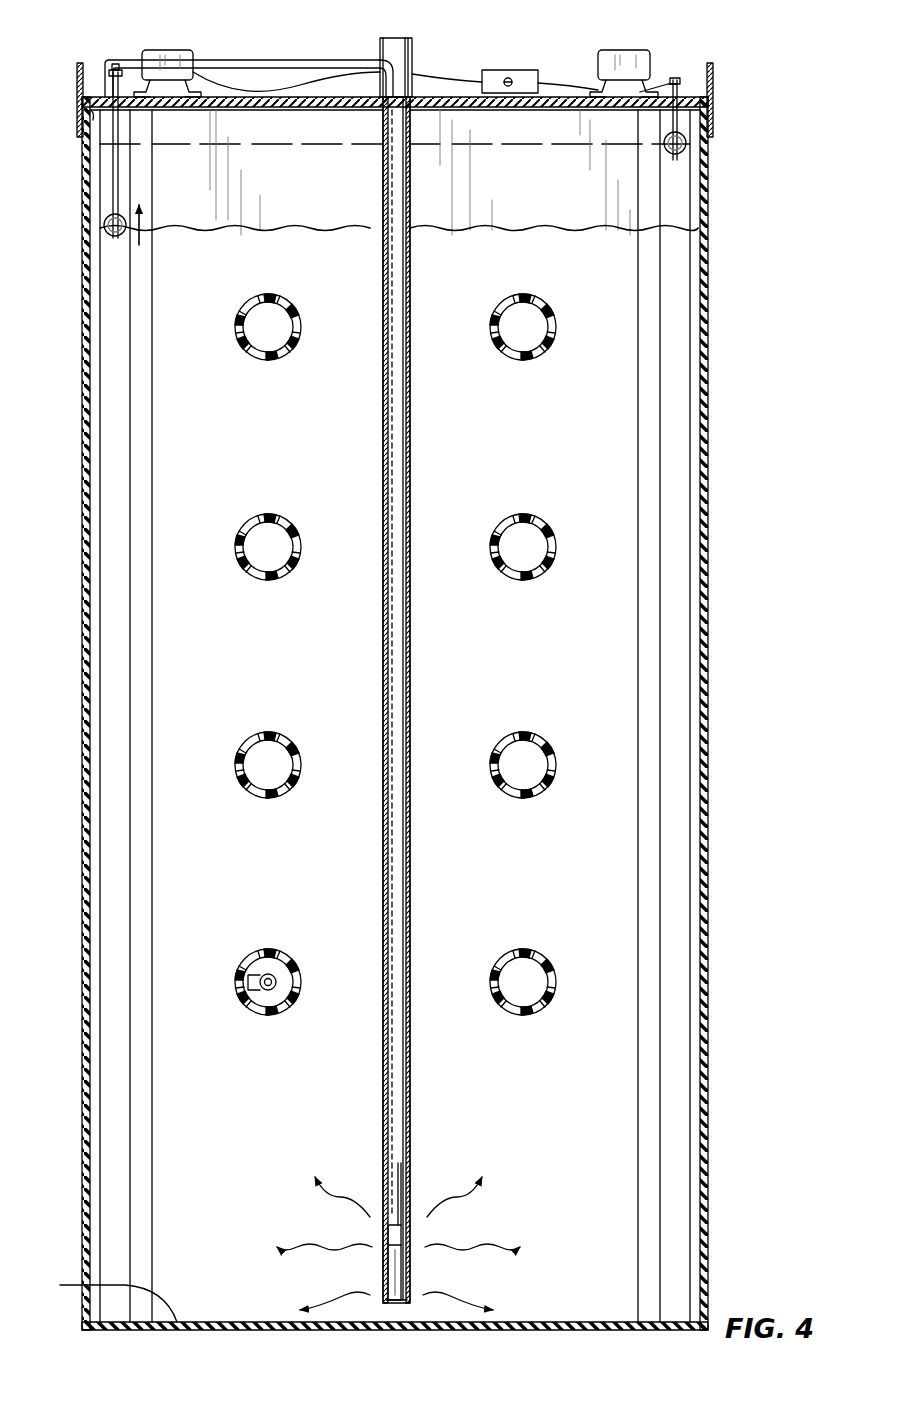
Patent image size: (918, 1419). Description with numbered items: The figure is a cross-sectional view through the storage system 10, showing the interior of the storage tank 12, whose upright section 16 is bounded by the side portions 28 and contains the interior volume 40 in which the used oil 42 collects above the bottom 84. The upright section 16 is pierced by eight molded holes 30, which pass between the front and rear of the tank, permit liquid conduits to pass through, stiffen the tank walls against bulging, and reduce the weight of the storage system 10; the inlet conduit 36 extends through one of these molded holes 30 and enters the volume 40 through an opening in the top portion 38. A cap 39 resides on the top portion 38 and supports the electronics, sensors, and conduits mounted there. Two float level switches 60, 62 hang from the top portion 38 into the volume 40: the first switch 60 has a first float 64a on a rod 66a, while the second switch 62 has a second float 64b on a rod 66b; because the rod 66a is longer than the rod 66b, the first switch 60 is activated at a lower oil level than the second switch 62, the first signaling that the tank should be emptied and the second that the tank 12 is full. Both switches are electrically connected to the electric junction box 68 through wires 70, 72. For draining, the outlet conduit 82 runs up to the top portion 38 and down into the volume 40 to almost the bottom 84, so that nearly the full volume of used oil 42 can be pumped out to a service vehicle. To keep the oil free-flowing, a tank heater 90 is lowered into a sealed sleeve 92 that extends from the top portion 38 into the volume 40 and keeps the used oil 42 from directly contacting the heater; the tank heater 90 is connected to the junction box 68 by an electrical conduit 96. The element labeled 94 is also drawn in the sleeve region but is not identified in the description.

The storage system 10 is at (794, 60).
The storage tank 12 is at (710, 397).
The upright section 16 is at (708, 533).
The side portions 28 is at (82, 735).
The molded holes 30 is at (247, 347).
The conduit 36 is at (258, 60).
The top portion 38 is at (84, 123).
The cap 39 is at (75, 71).
The volume 40 is at (532, 197).
The used oil 42 is at (325, 226).
The first liquid level switch 60 is at (152, 48).
The second liquid level switch 62 is at (628, 48).
The first float 64a is at (103, 222).
The second float 64b is at (686, 150).
The rod of first switch 66a is at (113, 173).
The rod of second switch 66b is at (677, 112).
The electric junction box 68 is at (508, 68).
The wire 70 is at (335, 75).
The wire 72 is at (596, 90).
The outlet conduit 82 is at (400, 45).
The bottom 84 is at (104, 1293).
The tank heater 90 is at (382, 1245).
The sealed sleeve 92 is at (410, 890).
The inner tube 94 is at (383, 885).
The electrical conduit 96 is at (404, 1178).